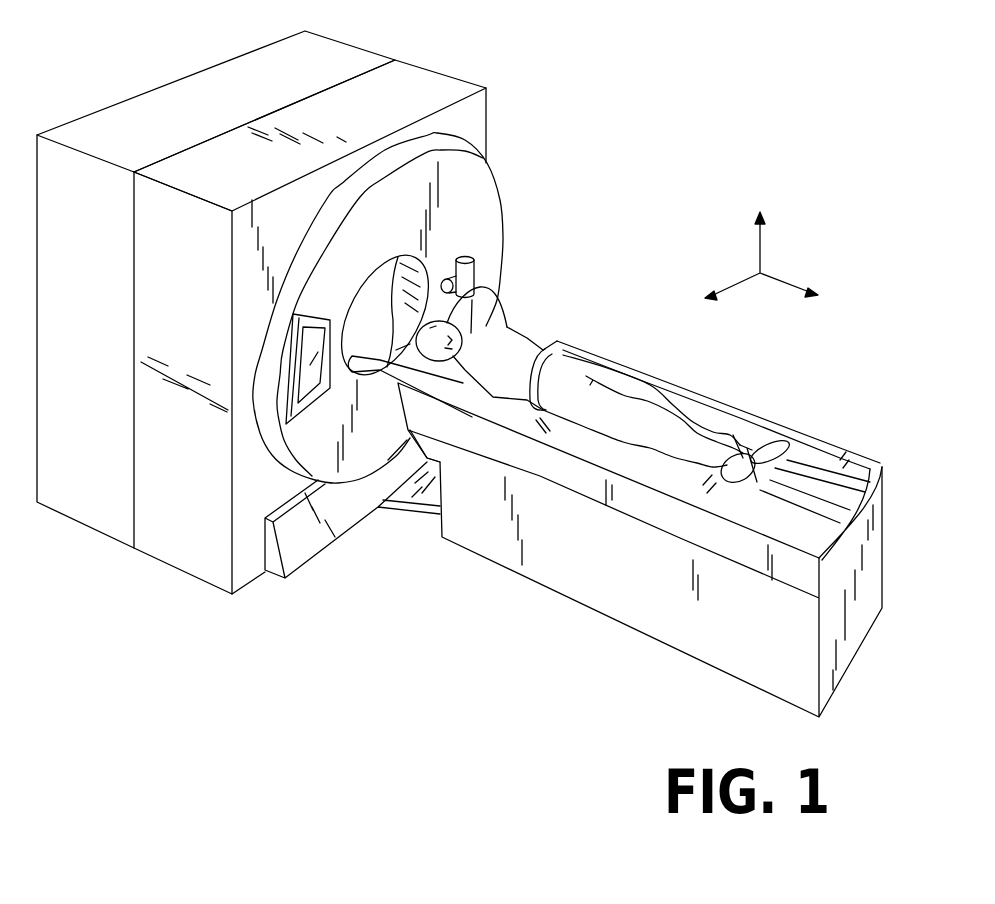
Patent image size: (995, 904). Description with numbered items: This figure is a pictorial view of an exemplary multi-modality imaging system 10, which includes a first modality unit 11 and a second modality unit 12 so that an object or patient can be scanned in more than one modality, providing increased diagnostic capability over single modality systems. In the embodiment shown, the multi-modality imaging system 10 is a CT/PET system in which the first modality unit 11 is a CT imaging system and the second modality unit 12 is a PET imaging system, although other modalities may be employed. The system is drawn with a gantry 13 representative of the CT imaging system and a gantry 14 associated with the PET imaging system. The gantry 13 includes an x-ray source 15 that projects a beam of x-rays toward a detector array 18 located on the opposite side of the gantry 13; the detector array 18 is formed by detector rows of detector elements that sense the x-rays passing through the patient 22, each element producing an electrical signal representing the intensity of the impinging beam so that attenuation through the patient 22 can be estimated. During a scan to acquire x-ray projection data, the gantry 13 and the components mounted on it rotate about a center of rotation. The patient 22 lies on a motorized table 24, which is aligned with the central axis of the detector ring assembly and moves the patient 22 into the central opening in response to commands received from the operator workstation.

The multi-modality imaging system 10 is at (459, 362).
The first modality unit 11 is at (211, 560).
The second modality unit 12 is at (92, 508).
The gantry 13 is at (470, 120).
The gantry 14 is at (110, 128).
The x-ray source 15 is at (470, 280).
The detector array 18 is at (308, 400).
The patient 22 is at (518, 348).
The motorized table 24 is at (556, 573).